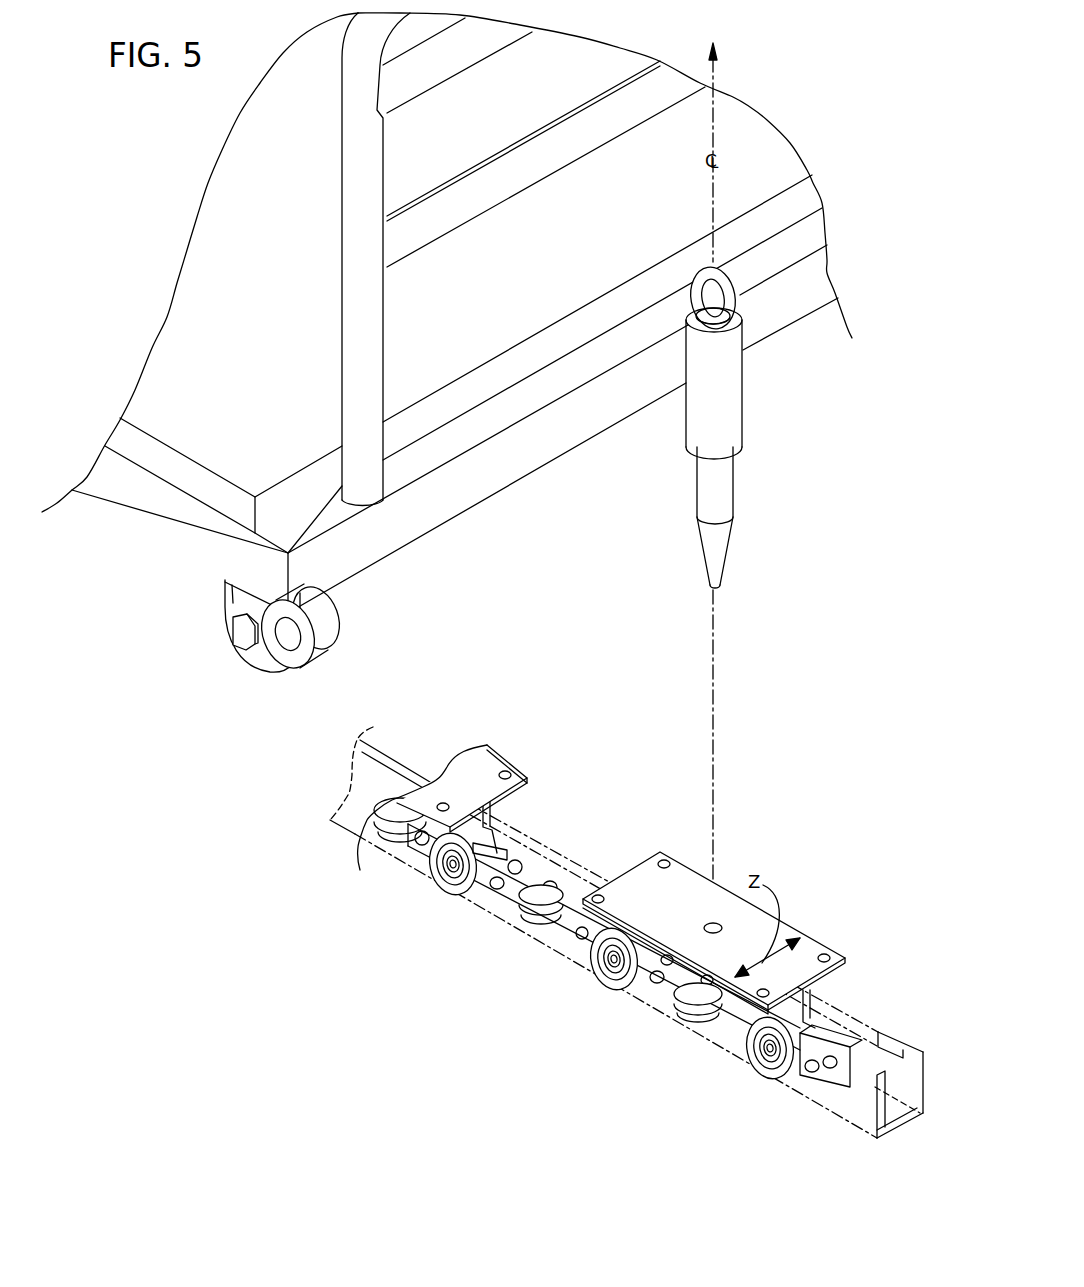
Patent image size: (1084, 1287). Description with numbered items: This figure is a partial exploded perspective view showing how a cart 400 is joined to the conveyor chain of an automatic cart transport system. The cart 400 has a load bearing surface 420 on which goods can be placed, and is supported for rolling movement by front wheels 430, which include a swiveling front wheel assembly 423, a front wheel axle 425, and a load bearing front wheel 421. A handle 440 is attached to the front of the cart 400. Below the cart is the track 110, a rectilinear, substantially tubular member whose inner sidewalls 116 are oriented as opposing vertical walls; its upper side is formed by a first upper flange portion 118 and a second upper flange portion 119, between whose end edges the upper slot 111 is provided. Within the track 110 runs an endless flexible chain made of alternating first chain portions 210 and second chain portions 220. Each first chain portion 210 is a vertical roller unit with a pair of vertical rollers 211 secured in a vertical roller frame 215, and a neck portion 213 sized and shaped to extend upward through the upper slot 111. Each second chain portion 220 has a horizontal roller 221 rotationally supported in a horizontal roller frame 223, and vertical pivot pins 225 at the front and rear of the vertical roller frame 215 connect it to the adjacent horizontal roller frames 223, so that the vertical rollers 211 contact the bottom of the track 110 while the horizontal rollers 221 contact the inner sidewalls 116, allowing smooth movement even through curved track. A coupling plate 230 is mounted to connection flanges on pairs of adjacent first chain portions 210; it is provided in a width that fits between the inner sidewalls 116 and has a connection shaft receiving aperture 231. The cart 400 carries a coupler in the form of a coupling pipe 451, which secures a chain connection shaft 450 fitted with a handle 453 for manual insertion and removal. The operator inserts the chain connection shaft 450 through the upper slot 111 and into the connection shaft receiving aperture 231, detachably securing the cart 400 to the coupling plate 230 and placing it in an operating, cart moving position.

The track 110 is at (644, 945).
The upper slot 111 is at (885, 1060).
The inner sidewalls 116 is at (882, 1112).
The first upper flange portion 118 is at (868, 1068).
The second upper flange portion 119 is at (880, 1050).
The first chain portion 210 is at (667, 966).
The vertical rollers 211 is at (757, 1070).
The neck portion 213 is at (752, 1064).
The vertical roller frame 215 is at (817, 1077).
The second chain portion 220 is at (596, 935).
The horizontal roller 221 is at (692, 973).
The horizontal roller frame 223 is at (668, 973).
The vertical pivot pins 225 is at (643, 977).
The coupling plate 230 is at (714, 916).
The connection shaft receiving aperture 231 is at (707, 927).
The cart 400 is at (140, 507).
The load bearing surface 420 is at (532, 397).
The load bearing front wheel 421 is at (263, 665).
The swiveling front wheel assembly 423 is at (230, 607).
The front wheel axle 425 is at (243, 635).
The front wheels 430 is at (228, 645).
The handle 440 is at (442, 218).
The chain connection shaft 450 is at (720, 497).
The coupling pipe 451 is at (727, 408).
The handle 453 is at (732, 298).